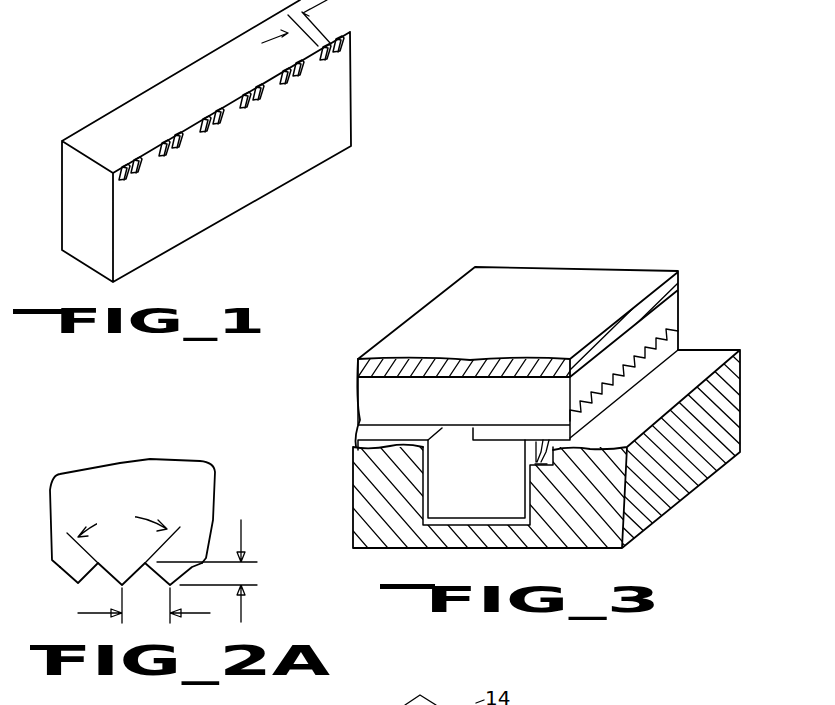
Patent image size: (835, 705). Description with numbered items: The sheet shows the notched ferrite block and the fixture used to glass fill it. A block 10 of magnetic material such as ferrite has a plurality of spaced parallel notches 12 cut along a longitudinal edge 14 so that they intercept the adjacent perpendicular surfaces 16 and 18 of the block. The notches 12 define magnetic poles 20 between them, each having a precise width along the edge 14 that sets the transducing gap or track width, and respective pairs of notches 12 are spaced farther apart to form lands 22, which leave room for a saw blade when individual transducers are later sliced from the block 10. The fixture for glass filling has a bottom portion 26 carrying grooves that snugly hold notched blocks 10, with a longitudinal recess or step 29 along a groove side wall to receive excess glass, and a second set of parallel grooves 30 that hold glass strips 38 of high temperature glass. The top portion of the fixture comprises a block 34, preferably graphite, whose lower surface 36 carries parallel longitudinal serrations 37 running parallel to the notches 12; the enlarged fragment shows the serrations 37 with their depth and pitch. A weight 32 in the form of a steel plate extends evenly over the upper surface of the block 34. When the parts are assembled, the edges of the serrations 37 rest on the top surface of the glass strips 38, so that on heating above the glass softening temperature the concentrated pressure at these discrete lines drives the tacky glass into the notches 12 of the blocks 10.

In FIG. 1, the block 10 is at (127, 60).
In FIG. 3, the block 10 is at (484, 489).
In FIG. 1, the notches 12 is at (312, 76).
In FIG. 1, the longitudinal edge 14 is at (348, 30).
In FIG. 1, the perpendicular surface 16 is at (240, 40).
In FIG. 1, the perpendicular surface 18 is at (346, 100).
In FIG. 1, the magnetic poles 20 is at (135, 158).
In FIG. 1, the lands 22 is at (180, 136).
In FIG. 3, the bottom portion 26 is at (692, 477).
In FIG. 3, the longitudinal recess or step 29 is at (540, 464).
In FIG. 3, the second set of parallel grooves 30 is at (698, 355).
In FIG. 3, the weight 32 is at (680, 278).
In FIG. 3, the block 34 is at (358, 395).
In FIG. 3, the lower surface 36 is at (670, 342).
In FIG. 2A, the serrations 37 is at (63, 570).
In FIG. 3, the serrations 37 is at (640, 370).
In FIG. 3, the glass strips 38 is at (611, 402).